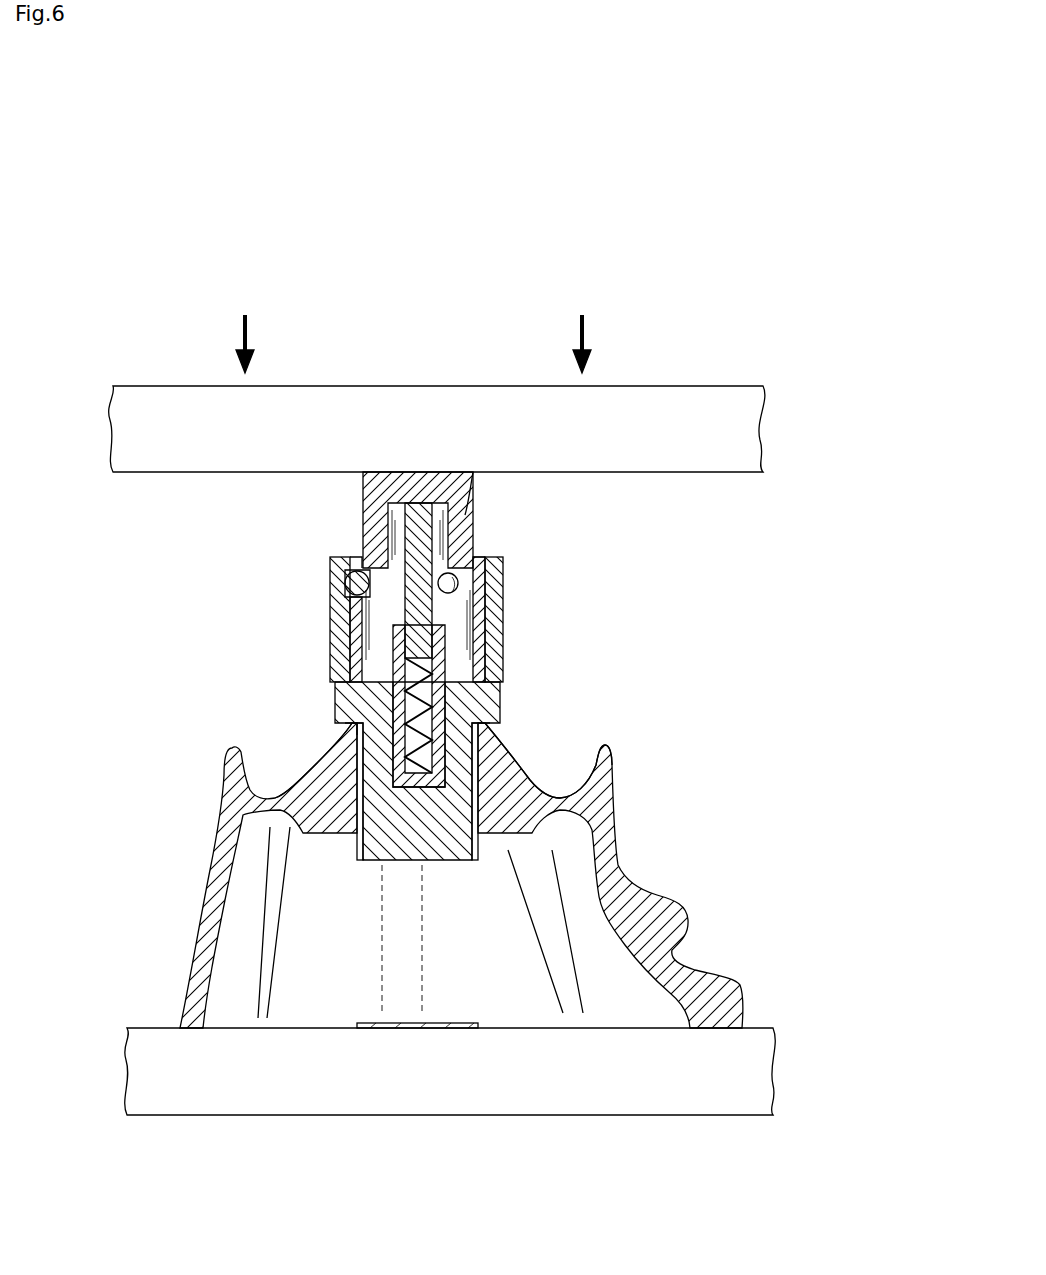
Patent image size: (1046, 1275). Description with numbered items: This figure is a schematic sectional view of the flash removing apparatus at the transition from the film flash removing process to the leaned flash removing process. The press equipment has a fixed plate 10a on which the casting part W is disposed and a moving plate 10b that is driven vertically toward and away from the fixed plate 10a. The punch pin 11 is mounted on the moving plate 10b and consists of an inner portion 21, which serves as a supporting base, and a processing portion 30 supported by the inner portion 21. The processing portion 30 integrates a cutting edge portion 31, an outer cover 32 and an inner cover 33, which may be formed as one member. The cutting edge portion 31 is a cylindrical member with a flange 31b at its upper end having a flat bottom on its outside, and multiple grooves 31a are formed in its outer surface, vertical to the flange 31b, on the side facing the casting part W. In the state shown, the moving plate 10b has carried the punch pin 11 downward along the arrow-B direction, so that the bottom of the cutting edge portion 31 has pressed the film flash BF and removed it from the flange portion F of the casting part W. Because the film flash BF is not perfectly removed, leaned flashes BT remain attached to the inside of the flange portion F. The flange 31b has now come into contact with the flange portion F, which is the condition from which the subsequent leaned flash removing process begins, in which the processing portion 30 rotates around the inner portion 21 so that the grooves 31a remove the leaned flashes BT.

The fixed plate 10a is at (163, 1045).
The moving plate 10b is at (162, 458).
The punch pin 11 is at (314, 579).
The inner portion 21 is at (463, 530).
The processing portion 30 is at (558, 573).
The cutting edge portion 31 is at (408, 788).
The grooves 31a is at (363, 845).
The flange 31b is at (342, 730).
The outer cover 32 is at (493, 642).
The inner cover 33 is at (487, 585).
The arrow-B direction B is at (413, 344).
The leaned flashes BT is at (347, 759).
The film flash BF is at (433, 1022).
The flange portion F is at (503, 733).
The casting part W is at (636, 775).